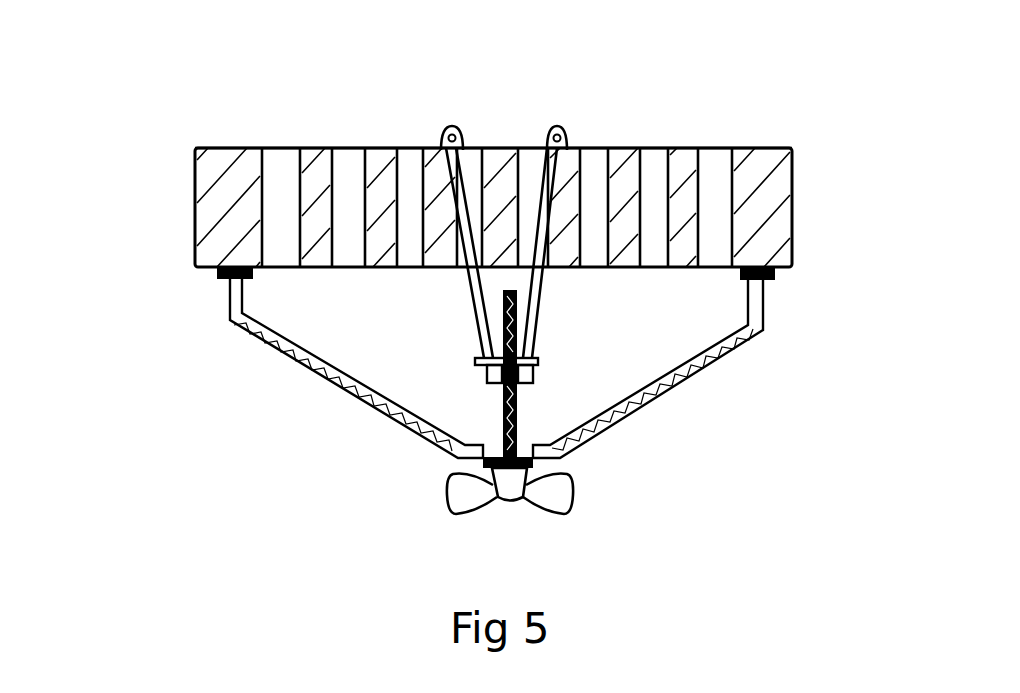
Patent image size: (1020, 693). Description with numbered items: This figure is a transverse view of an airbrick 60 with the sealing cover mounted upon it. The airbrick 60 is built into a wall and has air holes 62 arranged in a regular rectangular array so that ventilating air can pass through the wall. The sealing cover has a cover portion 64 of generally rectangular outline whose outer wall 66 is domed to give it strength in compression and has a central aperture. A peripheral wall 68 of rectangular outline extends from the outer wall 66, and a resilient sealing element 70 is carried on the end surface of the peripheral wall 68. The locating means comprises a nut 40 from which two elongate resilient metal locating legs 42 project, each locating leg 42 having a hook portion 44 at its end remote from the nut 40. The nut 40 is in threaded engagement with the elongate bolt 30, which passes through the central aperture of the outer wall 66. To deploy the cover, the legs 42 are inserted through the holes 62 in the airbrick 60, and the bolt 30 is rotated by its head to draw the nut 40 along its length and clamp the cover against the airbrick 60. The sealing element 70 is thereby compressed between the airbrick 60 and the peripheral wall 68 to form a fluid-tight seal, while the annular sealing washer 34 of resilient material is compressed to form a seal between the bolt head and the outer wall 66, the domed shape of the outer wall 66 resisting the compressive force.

The elongate bolt 30 is at (513, 412).
The annular sealing washer 34 is at (483, 462).
The nut 40 is at (487, 375).
The locating legs 42 is at (537, 309).
The hook portion 44 is at (557, 128).
The airbrick 60 is at (794, 191).
The air holes 62 is at (712, 146).
The cover portion 64 is at (275, 372).
The outer wall 66 is at (710, 364).
The peripheral wall 68 is at (230, 306).
The resilient sealing element 70 is at (775, 281).